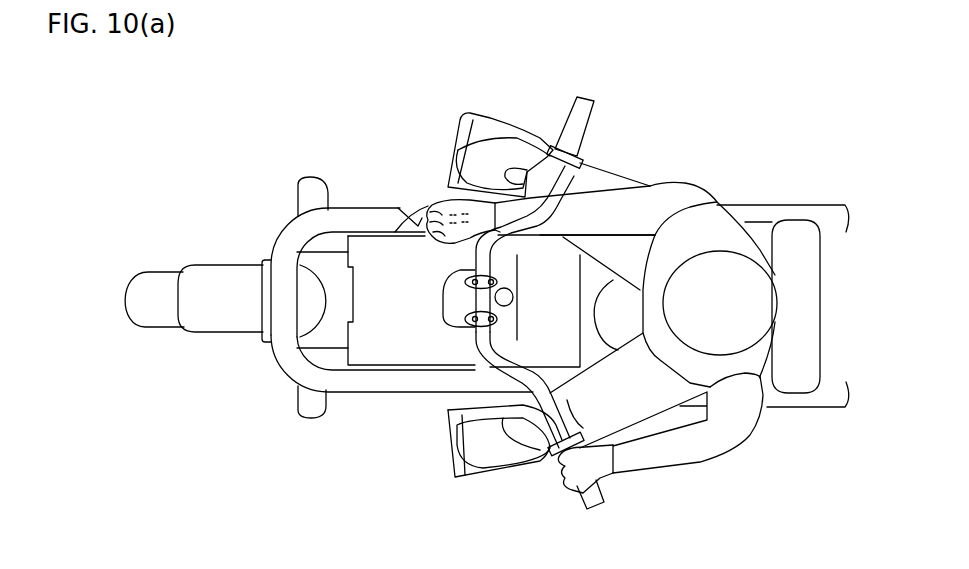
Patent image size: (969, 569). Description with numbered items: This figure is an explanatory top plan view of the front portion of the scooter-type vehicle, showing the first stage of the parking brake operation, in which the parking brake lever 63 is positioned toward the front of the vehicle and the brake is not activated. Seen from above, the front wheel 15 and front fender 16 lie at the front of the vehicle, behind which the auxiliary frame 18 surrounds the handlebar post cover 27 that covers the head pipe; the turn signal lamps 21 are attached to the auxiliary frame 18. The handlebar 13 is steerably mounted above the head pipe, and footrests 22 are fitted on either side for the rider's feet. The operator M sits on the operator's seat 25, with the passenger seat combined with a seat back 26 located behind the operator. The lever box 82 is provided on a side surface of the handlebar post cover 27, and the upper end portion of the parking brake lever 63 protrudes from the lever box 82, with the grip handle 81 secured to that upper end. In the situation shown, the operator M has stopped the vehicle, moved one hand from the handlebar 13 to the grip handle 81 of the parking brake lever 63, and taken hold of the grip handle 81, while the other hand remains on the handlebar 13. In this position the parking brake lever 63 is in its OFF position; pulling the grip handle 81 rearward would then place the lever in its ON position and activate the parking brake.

The handlebar 13 is at (553, 150).
The front wheel 15 is at (141, 320).
The front fender 16 is at (213, 320).
The auxiliary frame 18 is at (288, 354).
The turn signal lamp 21 is at (303, 200).
The footrest 22 is at (486, 128).
The operator's seat 25 is at (610, 292).
The passenger seat combined with a seat back 26 is at (793, 228).
The handlebar post cover 27 is at (387, 350).
The parking brake lever 63 is at (435, 200).
The grip handle 81 is at (438, 202).
The lever box 82 is at (430, 204).
The operator M is at (670, 197).